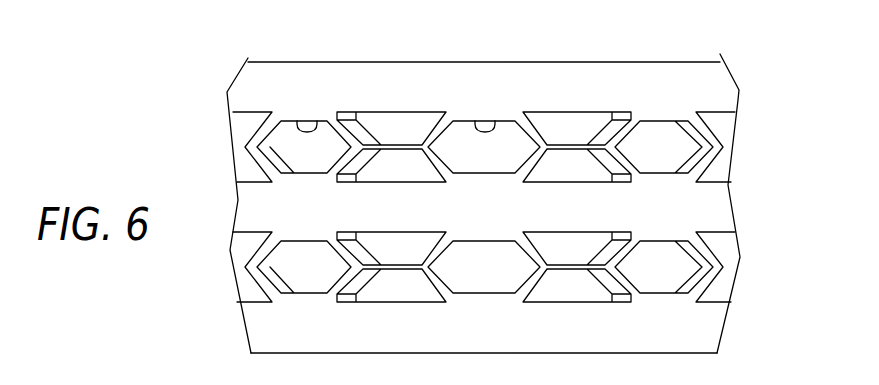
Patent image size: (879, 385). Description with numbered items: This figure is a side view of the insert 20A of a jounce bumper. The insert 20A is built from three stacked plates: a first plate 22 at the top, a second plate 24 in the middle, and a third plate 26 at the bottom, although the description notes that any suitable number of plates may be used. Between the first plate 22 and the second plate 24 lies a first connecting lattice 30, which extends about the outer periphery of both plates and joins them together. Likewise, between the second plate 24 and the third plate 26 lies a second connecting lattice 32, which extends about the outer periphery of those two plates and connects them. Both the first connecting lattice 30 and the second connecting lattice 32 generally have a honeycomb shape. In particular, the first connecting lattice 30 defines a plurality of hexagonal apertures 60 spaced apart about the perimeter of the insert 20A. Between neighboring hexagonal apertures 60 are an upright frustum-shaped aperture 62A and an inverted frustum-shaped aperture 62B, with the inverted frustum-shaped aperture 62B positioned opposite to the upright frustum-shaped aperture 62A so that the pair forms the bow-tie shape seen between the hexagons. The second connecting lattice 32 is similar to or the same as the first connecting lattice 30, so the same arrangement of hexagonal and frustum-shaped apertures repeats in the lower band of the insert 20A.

The insert 20A is at (172, 98).
The first plate 22 is at (722, 88).
The second plate 24 is at (718, 213).
The third plate 26 is at (700, 327).
The first connecting lattice 30 is at (255, 141).
The second connecting lattice 32 is at (248, 268).
The hexagonal apertures 60 is at (318, 122).
The upright frustum-shaped aperture 62A is at (598, 180).
The inverted frustum-shaped aperture 62B is at (573, 130).